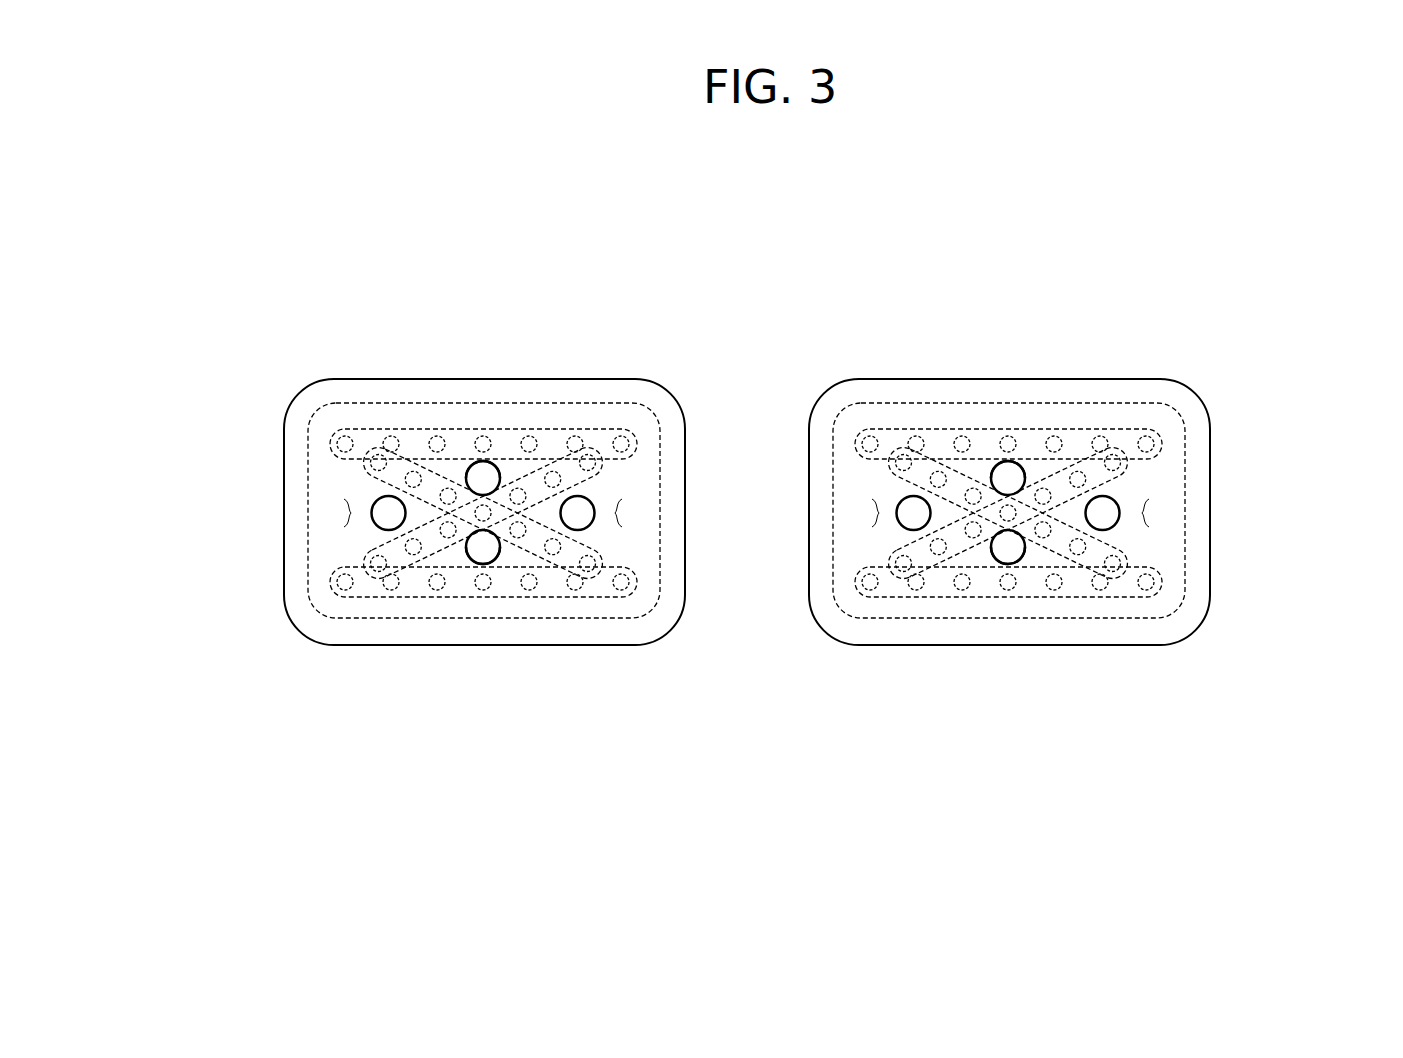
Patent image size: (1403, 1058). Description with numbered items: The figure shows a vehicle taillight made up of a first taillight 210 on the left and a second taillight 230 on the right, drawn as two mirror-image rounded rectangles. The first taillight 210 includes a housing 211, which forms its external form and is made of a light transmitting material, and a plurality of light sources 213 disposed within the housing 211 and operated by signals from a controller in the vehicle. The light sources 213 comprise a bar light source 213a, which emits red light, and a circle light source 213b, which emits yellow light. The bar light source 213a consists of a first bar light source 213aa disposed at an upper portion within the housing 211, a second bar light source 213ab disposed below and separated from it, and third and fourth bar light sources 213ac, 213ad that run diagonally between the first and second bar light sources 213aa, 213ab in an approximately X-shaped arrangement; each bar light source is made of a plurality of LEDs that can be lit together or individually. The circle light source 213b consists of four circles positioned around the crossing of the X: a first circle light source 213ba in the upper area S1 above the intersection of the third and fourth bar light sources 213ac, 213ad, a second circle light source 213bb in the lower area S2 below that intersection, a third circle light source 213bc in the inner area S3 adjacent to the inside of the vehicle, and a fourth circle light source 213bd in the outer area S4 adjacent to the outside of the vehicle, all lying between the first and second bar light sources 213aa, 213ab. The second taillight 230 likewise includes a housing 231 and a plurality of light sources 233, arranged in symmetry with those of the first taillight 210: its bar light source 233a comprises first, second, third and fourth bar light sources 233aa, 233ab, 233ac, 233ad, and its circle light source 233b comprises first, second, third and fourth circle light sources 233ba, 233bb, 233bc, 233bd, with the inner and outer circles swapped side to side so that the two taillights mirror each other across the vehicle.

The first taillight 210 is at (290, 365).
The housing 211 is at (588, 379).
The plurality of light sources 213 is at (578, 852).
The bar light source 213a is at (185, 432).
The first bar light source 213aa is at (333, 444).
The second bar light source 213ab is at (333, 582).
The third bar light source 213ac is at (377, 464).
The fourth bar light source 213ad is at (377, 561).
The circle light source 213b is at (665, 728).
The first circle light source 213ba is at (462, 487).
The second circle light source 213bb is at (503, 556).
The third circle light source 213bc is at (590, 528).
The fourth circle light source 213bd is at (397, 532).
The second taillight 230 is at (1201, 366).
The housing 231 is at (889, 379).
The plurality of light sources 233 is at (1107, 852).
The bar light source 233a is at (1309, 432).
The first bar light source 233aa is at (1160, 444).
The second bar light source 233ab is at (1160, 582).
The third bar light source 233ac is at (1115, 464).
The fourth bar light source 233ad is at (1117, 561).
The circle light source 233b is at (1187, 728).
The first circle light source 233ba is at (1030, 470).
The second circle light source 233bb is at (998, 556).
The third circle light source 233bc is at (902, 528).
The fourth circle light source 233bd is at (1095, 532).
The upper area S1 is at (460, 474).
The lower area S2 is at (468, 553).
The inner area S3 is at (622, 513).
The outer area S4 is at (344, 513).